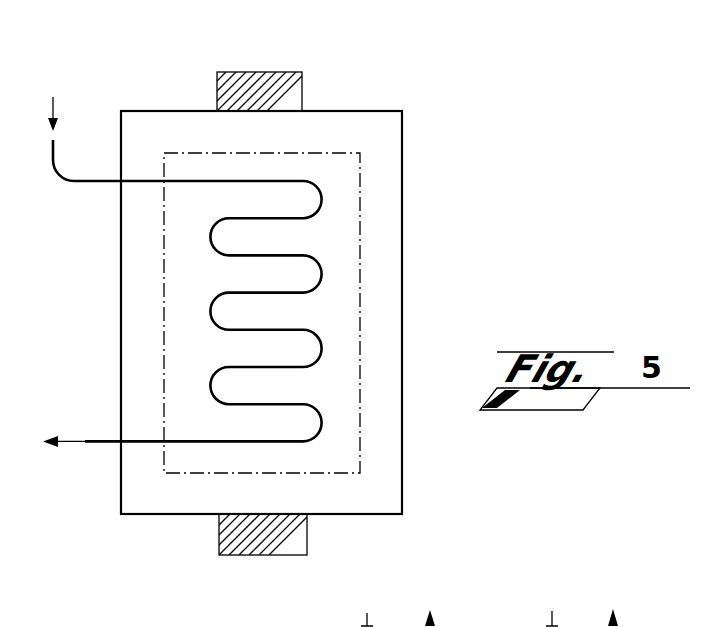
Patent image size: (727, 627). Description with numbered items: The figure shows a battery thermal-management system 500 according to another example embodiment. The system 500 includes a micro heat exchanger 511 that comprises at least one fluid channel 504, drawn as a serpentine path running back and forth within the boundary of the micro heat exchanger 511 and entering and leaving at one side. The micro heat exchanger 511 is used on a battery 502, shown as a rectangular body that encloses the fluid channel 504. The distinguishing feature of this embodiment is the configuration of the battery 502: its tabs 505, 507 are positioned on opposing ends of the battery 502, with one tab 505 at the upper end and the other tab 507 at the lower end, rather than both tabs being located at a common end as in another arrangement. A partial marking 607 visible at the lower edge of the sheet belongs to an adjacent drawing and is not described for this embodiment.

The battery thermal-management system 500 is at (453, 70).
The battery 502 is at (352, 514).
The fluid channel 504 is at (318, 320).
The tab 505 is at (249, 72).
The tab 507 is at (278, 555).
The micro heat exchanger 511 is at (165, 330).
The element of adjacent figure 607 is at (655, 625).